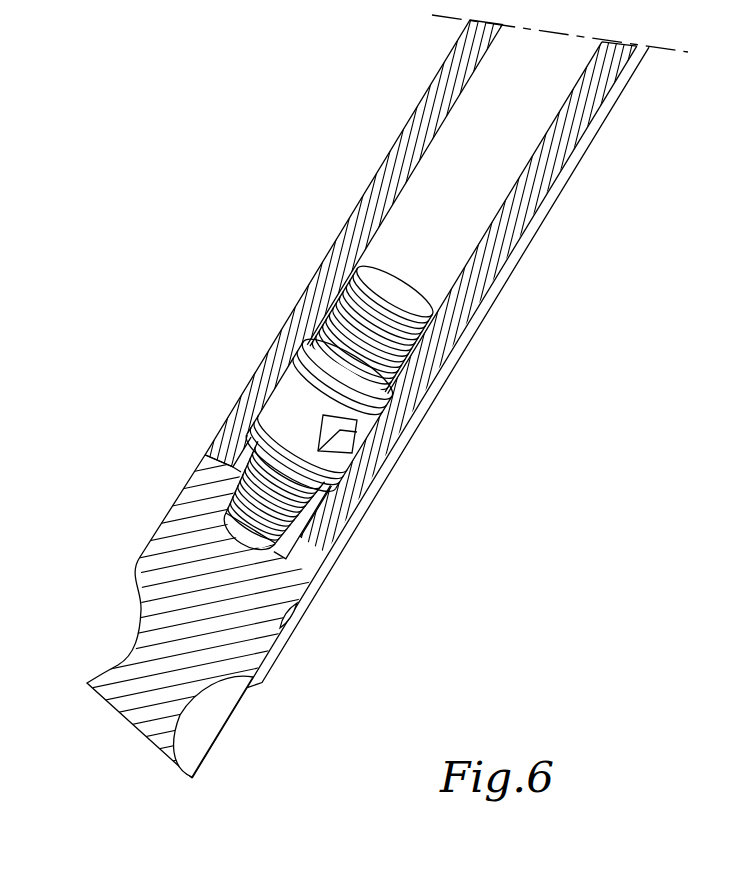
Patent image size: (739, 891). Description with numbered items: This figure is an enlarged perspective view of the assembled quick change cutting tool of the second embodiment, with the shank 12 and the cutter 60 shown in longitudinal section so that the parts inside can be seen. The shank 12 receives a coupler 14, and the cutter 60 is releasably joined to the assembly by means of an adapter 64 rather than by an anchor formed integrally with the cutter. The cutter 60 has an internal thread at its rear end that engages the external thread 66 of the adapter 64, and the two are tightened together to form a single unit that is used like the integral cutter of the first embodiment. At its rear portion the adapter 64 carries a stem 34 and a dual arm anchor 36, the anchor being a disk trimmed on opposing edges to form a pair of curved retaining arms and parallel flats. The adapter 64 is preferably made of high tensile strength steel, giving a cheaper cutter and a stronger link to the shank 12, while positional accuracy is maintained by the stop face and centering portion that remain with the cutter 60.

The shank 12 is at (380, 172).
The coupler 14 is at (308, 411).
The dual arm anchor 36 is at (295, 402).
The stem 34 is at (288, 430).
The cutter 60 is at (140, 557).
The adapter 64 is at (330, 486).
The external thread 66 is at (295, 512).